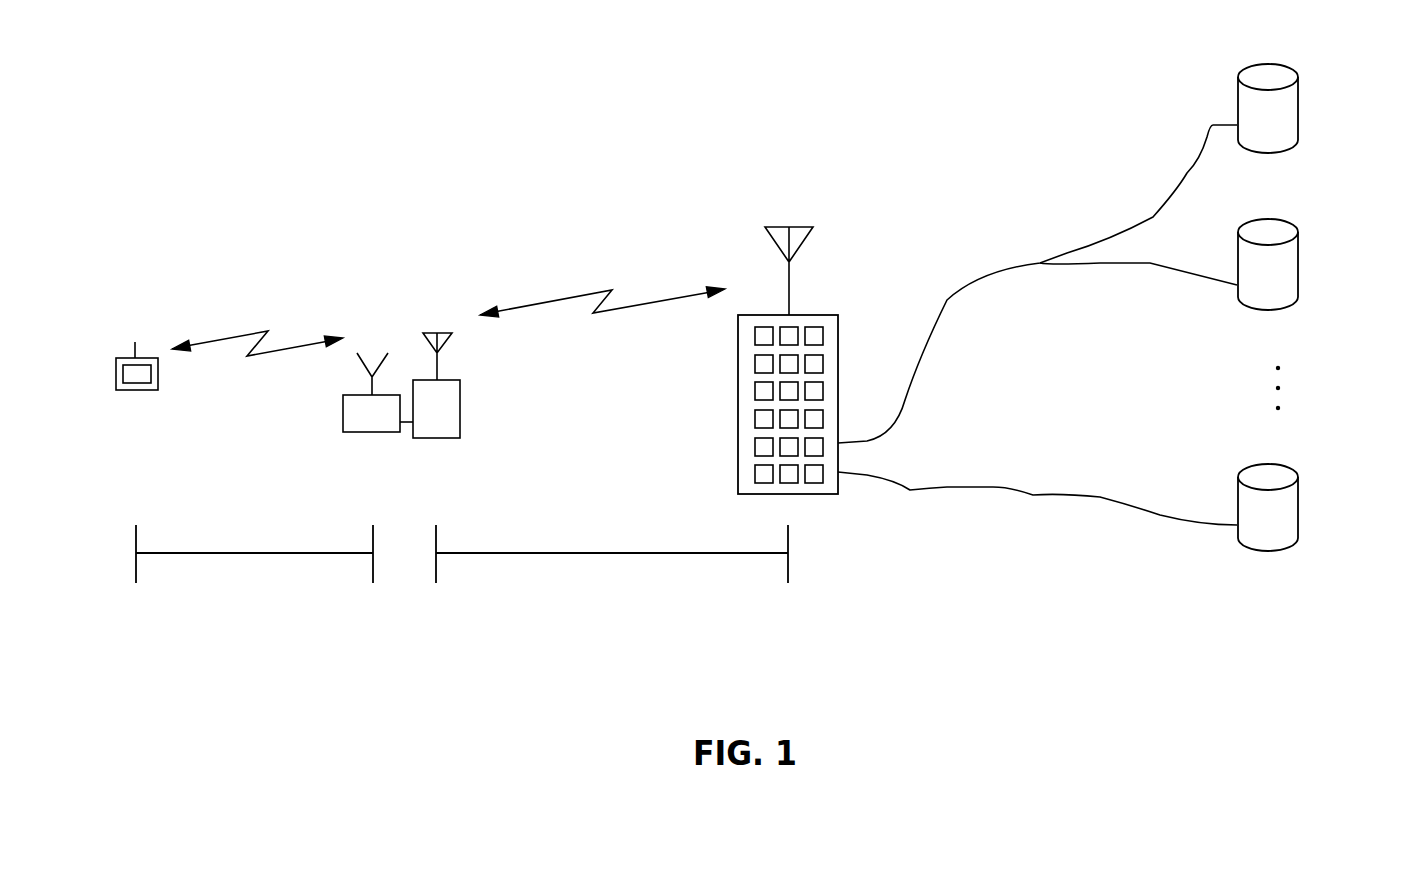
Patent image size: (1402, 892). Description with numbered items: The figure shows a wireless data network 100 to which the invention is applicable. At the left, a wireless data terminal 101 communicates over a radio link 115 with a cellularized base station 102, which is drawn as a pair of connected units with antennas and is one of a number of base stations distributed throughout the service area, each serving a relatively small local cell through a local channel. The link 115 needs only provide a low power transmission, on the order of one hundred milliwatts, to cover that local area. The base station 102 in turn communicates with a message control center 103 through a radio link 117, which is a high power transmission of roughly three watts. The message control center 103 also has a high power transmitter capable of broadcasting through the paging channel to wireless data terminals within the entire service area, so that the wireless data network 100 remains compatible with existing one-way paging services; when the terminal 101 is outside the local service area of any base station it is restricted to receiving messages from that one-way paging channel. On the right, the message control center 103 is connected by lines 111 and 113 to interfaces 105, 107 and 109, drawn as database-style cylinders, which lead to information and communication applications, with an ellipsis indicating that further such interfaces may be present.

The wireless data network 100 is at (493, 243).
The wireless data terminal 101 is at (123, 357).
The cellularized base station 102 is at (460, 450).
The message control center 103 is at (827, 315).
The interface to information and communication applications 105 is at (1298, 130).
The interface to information and communication applications 107 is at (1298, 288).
The interface to information and communication applications 109 is at (1298, 520).
The network line 111 is at (1053, 254).
The network line 113 is at (992, 483).
The radio link 115 is at (297, 553).
The radio link 117 is at (645, 553).